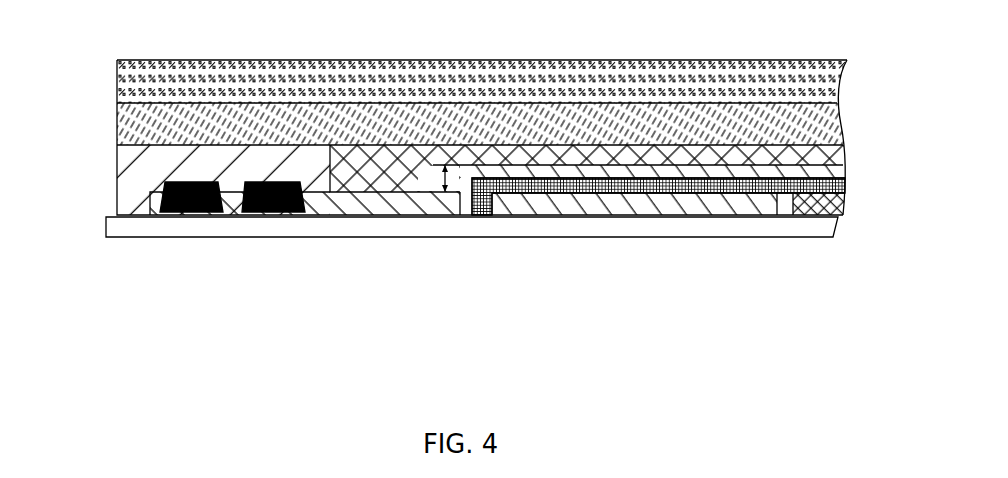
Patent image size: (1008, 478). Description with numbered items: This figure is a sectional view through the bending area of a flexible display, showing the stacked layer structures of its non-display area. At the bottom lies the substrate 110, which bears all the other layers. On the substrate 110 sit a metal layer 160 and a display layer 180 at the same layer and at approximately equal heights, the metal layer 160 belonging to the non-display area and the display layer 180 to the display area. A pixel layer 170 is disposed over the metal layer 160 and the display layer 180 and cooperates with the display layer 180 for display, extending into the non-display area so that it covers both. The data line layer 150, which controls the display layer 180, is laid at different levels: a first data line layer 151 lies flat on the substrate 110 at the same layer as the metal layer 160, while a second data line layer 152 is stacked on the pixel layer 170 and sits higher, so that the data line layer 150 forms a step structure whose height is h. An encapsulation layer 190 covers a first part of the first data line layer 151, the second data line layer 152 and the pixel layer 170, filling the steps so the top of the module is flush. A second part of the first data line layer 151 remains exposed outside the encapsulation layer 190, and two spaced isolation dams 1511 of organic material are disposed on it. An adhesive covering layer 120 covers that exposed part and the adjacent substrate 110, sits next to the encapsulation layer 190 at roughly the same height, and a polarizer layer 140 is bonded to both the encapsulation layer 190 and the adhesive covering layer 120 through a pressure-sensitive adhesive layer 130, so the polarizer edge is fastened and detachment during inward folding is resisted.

The substrate 110 is at (150, 228).
The adhesive covering layer 120 is at (128, 182).
The pressure-sensitive adhesive layer 130 is at (118, 113).
The polarizer layer 140 is at (118, 77).
The data line layer 150 is at (500, 268).
The first data line layer 151 is at (330, 205).
The second data line layer 152 is at (353, 335).
The isolation dams 1511 is at (186, 183).
The metal layer 160 is at (650, 200).
The pixel layer 170 is at (717, 200).
The display layer 180 is at (820, 212).
The encapsulation layer 190 is at (823, 164).